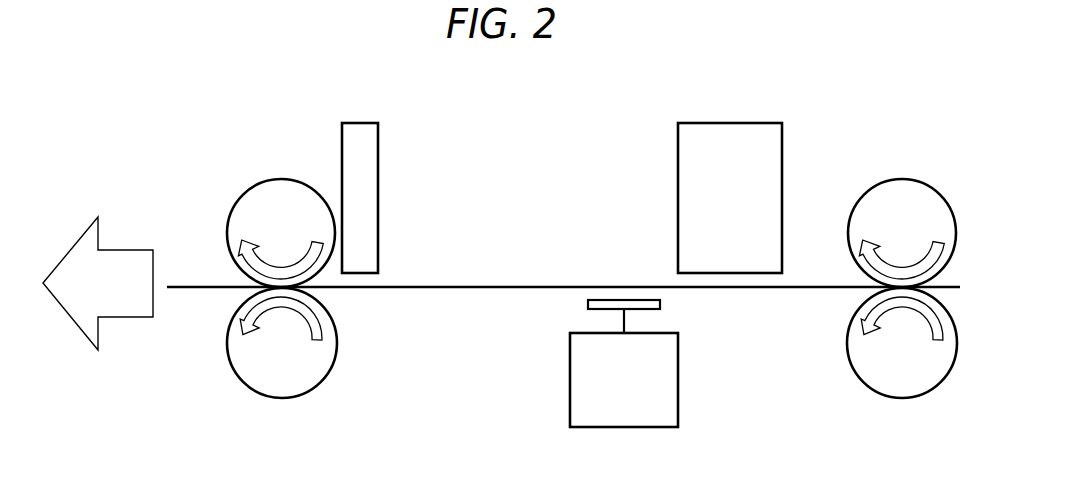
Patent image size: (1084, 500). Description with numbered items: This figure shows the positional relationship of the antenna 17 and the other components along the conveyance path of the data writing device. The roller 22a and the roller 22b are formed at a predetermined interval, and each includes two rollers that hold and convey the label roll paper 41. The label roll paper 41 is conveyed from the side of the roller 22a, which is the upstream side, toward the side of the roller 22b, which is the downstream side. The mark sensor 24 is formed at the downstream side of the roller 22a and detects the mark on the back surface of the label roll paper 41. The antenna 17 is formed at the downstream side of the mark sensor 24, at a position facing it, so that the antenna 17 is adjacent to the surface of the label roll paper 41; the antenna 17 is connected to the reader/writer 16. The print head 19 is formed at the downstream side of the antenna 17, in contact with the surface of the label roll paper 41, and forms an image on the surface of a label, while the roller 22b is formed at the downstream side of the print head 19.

The label roll paper 41 is at (431, 287).
The roller 22b is at (281, 179).
The roller 22a is at (899, 179).
The print head 19 is at (355, 123).
The mark sensor 24 is at (760, 123).
The antenna 17 is at (588, 302).
The reader/writer 16 is at (680, 410).